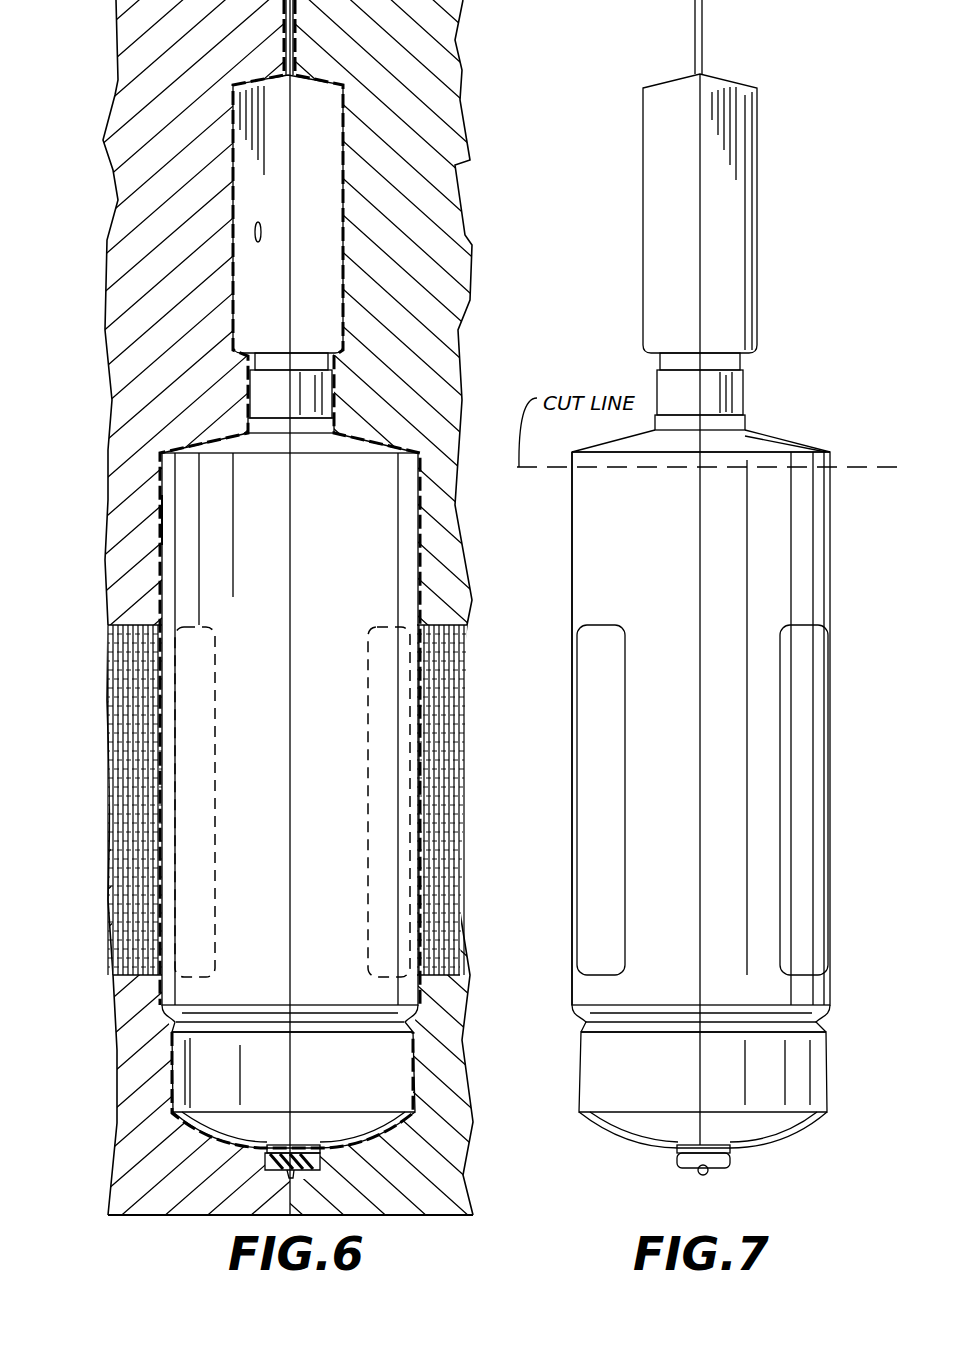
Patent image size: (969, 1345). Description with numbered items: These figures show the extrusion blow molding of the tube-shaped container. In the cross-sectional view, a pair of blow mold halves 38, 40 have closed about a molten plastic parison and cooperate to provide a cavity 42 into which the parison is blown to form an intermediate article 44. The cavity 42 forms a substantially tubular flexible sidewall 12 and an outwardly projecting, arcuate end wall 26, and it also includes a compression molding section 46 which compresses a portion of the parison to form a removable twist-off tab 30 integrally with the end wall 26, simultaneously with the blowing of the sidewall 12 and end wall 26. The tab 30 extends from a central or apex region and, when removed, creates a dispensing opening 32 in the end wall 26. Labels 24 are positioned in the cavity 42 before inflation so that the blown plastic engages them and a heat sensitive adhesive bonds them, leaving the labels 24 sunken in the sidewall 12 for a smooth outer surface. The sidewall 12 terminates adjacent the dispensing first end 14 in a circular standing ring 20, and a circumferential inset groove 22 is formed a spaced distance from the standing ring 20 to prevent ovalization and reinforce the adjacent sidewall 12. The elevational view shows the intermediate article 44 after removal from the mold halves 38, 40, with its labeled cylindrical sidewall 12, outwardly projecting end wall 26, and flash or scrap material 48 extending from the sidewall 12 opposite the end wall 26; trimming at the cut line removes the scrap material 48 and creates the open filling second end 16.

In FIG. 6, the flexible sidewall 12 is at (417, 558).
In FIG. 7, the flexible sidewall 12 is at (824, 580).
In FIG. 7, the first end 14 is at (795, 1125).
In FIG. 7, the second end 16 is at (832, 492).
In FIG. 6, the circular standing ring 20 is at (293, 1072).
In FIG. 7, the circular standing ring 20 is at (828, 1110).
In FIG. 6, the circumferential inset groove 22 is at (188, 1018).
In FIG. 7, the circumferential inset groove 22 is at (820, 1020).
In FIG. 6, the label 24 is at (452, 712).
In FIG. 7, the label 24 is at (810, 687).
In FIG. 6, the end wall 26 is at (385, 1108).
In FIG. 7, the end wall 26 is at (750, 1140).
In FIG. 6, the removable tab 30 is at (310, 1147).
In FIG. 7, the removable tab 30 is at (690, 1170).
In FIG. 7, the dispensing opening 32 is at (690, 1140).
In FIG. 6, the blow mold half 38 is at (140, 122).
In FIG. 6, the blow mold half 40 is at (430, 105).
In FIG. 6, the cavity 42 is at (163, 532).
In FIG. 6, the intermediate article 44 is at (160, 600).
In FIG. 7, the intermediate article 44 is at (600, 538).
In FIG. 6, the compression molding section 46 is at (335, 1160).
In FIG. 6, the flash material 48 is at (347, 227).
In FIG. 7, the flash material 48 is at (730, 218).